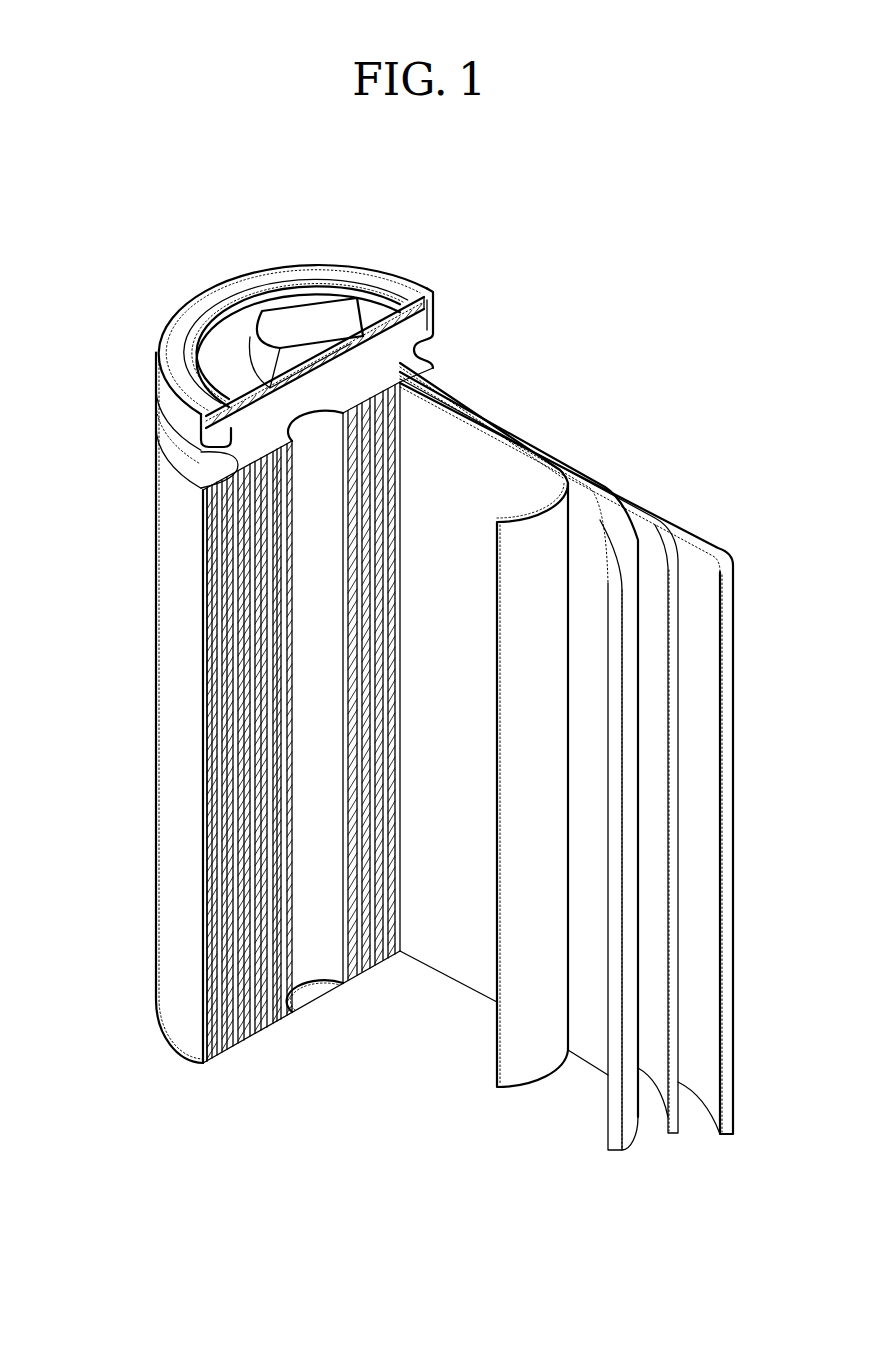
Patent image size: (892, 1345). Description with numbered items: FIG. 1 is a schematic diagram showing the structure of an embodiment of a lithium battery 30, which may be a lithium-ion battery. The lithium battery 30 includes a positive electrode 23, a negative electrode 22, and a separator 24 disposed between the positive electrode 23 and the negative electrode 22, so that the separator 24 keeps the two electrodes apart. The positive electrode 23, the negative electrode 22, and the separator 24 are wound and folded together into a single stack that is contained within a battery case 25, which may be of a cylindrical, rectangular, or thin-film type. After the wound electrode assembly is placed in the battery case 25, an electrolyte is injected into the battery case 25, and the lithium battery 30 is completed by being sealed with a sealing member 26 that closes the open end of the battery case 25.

The lithium battery 30 is at (529, 226).
The battery case 25 is at (165, 708).
The sealing member 26 is at (290, 308).
The separator 24 is at (517, 450).
The positive electrode 23 is at (592, 495).
The negative electrode 22 is at (717, 550).